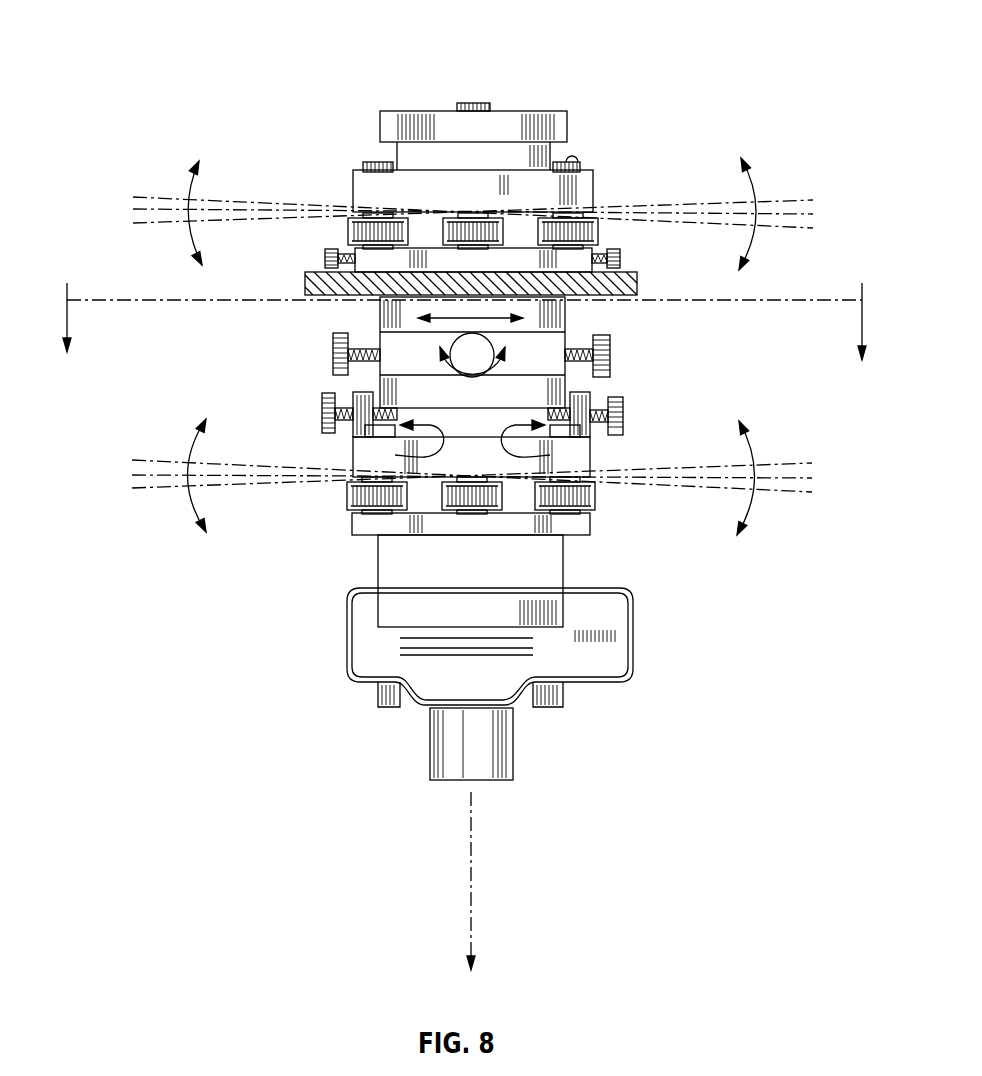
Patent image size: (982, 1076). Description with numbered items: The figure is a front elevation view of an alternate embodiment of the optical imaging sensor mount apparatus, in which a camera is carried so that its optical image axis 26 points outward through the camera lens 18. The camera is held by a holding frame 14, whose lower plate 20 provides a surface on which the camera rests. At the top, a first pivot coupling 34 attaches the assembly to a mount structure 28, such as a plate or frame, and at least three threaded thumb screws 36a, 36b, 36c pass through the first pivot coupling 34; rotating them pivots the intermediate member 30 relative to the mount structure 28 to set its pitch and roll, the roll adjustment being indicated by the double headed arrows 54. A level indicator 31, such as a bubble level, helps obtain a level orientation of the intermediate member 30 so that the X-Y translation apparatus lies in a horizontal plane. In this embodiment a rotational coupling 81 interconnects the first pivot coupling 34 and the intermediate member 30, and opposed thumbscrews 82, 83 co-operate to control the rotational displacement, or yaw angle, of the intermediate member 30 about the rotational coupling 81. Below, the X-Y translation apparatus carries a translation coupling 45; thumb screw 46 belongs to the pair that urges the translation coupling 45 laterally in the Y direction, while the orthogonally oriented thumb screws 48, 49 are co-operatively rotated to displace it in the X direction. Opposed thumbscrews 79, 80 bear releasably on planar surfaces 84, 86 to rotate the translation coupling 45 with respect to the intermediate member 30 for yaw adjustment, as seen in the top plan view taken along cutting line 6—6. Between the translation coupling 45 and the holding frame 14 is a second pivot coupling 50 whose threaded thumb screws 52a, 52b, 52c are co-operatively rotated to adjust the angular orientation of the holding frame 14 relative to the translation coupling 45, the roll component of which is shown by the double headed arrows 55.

The cutting line 6— 6 is at (464, 340).
The holding frame 14 is at (375, 685).
The camera lens 18 is at (432, 748).
The lower plate 20 is at (538, 708).
The optical image axis 26 is at (473, 922).
The mount structure 28 is at (517, 278).
The intermediate member 30 is at (567, 312).
The level indicator 31 is at (574, 157).
The first pivot coupling 34 is at (358, 168).
The threaded thumb screw 36a is at (597, 235).
The threaded thumb screw 36b is at (447, 232).
The threaded thumb screw 36c is at (352, 232).
The translation coupling 45 is at (425, 492).
The thumb screw 46 is at (460, 346).
The thumb screw 48 is at (612, 352).
The thumb screw 49 is at (333, 352).
The second pivot coupling 50 is at (363, 533).
The threaded thumb screw 52a is at (595, 498).
The threaded thumb screw 52b is at (508, 500).
The threaded thumb screw 52c is at (347, 493).
The double headed arrows 54 is at (188, 188).
The double headed arrows 55 is at (188, 440).
The thumbscrew 79 is at (623, 412).
The thumbscrew 80 is at (322, 408).
The rotational coupling 81 is at (476, 100).
The thumbscrew 82 is at (622, 258).
The thumbscrew 83 is at (325, 258).
The planar surface 84 is at (396, 455).
The planar surface 86 is at (550, 456).